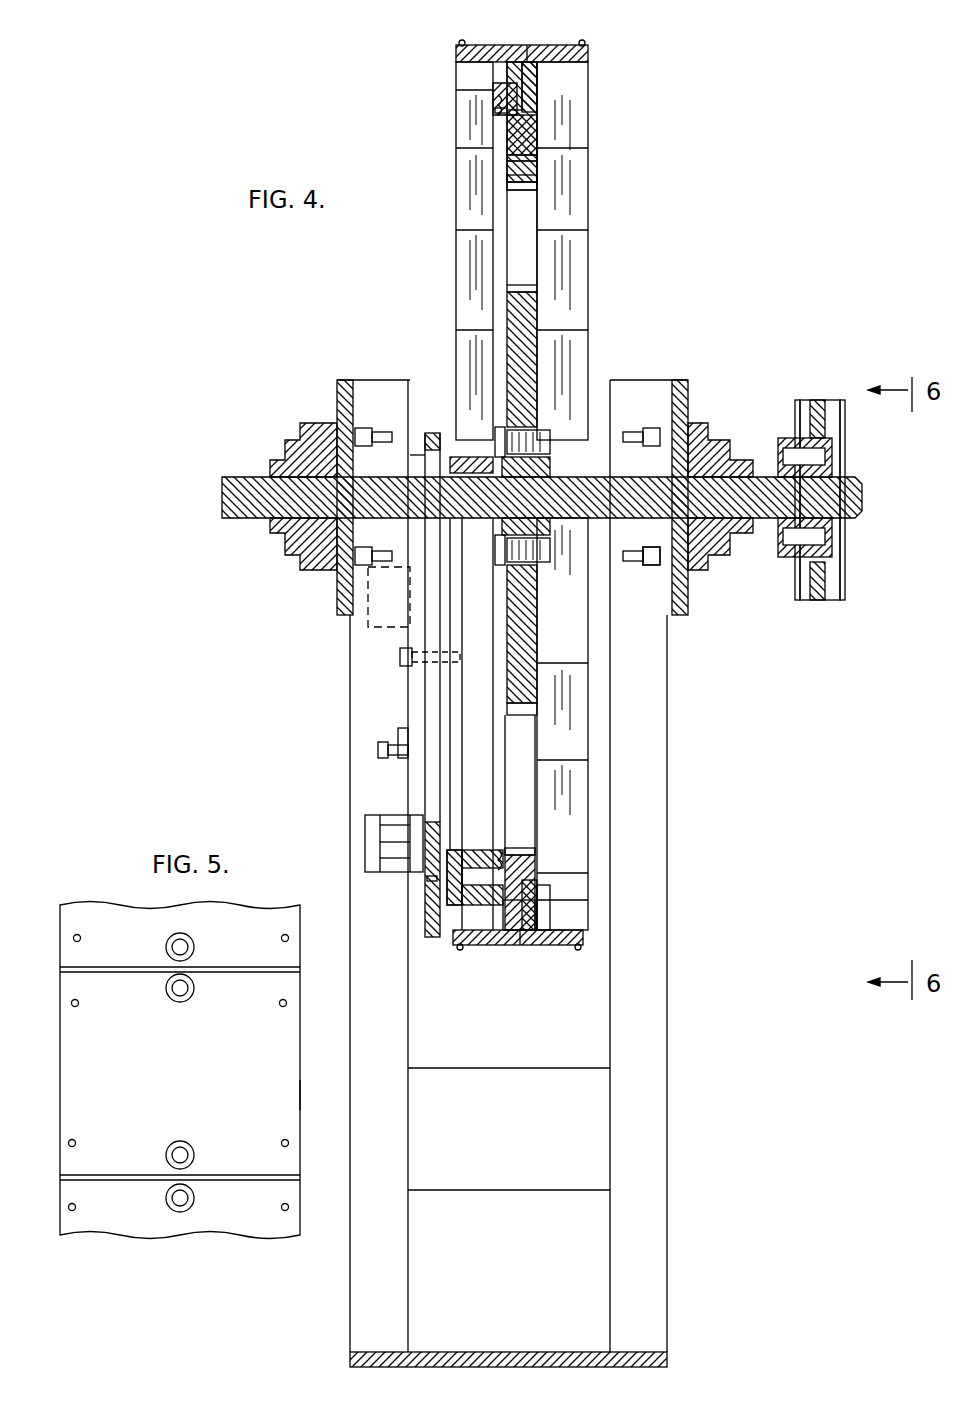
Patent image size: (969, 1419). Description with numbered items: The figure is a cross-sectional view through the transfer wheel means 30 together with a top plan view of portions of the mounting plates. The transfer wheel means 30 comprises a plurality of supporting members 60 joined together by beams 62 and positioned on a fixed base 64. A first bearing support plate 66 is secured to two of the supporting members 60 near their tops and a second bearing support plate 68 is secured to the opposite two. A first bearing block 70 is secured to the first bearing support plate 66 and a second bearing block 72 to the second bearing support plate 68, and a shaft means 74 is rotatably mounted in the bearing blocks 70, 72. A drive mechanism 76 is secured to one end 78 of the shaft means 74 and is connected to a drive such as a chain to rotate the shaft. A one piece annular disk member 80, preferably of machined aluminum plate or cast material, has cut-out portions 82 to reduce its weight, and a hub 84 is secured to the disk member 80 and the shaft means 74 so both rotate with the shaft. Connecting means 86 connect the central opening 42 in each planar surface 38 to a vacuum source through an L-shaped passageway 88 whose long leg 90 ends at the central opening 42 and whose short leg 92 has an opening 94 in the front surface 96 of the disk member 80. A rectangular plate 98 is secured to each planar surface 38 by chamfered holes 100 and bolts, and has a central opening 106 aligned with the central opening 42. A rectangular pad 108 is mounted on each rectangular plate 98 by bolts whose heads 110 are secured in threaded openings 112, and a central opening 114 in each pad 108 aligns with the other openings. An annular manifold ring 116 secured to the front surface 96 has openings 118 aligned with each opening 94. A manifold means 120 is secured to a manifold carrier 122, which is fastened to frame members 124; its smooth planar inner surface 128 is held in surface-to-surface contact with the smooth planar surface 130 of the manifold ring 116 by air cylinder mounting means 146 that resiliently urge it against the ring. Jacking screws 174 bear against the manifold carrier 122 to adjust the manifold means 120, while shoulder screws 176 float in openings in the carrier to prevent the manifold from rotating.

In FIG. 4, the transfer wheel means 30 is at (310, 720).
In FIG. 5, the planar surface 38 is at (133, 938).
In FIG. 4, the central opening 42 is at (525, 70).
In FIG. 4, the supporting members 60 is at (352, 1005).
In FIG. 4, the beams 62 is at (525, 1158).
In FIG. 4, the fixed base 64 is at (645, 1352).
In FIG. 4, the first bearing support plate 66 is at (340, 392).
In FIG. 4, the second bearing support plate 68 is at (683, 398).
In FIG. 4, the first bearing block 70 is at (300, 528).
In FIG. 4, the second bearing block 72 is at (725, 540).
In FIG. 4, the shaft means 74 is at (637, 522).
In FIG. 4, the drive mechanism 76 is at (820, 430).
In FIG. 4, the one end 78 is at (862, 505).
In FIG. 4, the annular disk member 80 is at (528, 308).
In FIG. 4, the cut-out portions 82 is at (528, 225).
In FIG. 4, the hub 84 is at (548, 540).
In FIG. 4, the connecting means 86 is at (445, 112).
In FIG. 4, the L-shaped passageway 88 is at (545, 103).
In FIG. 4, the long leg 90 is at (495, 85).
In FIG. 4, the short leg 92 is at (500, 180).
In FIG. 4, the opening 94 is at (510, 130).
In FIG. 4, the front surface 96 is at (540, 190).
In FIG. 4, the rectangular plate 98 is at (500, 45).
In FIG. 5, the rectangular plate 98 is at (290, 1088).
In FIG. 5, the chamfered holes 100 is at (194, 985).
In FIG. 5, the central opening 106 is at (178, 1070).
In FIG. 4, the rectangular pad 108 is at (456, 55).
In FIG. 4, the heads 110 is at (462, 42).
In FIG. 5, the threaded openings 112 is at (68, 1000).
In FIG. 4, the central opening 114 is at (527, 45).
In FIG. 4, the annular manifold ring 116 is at (500, 95).
In FIG. 4, the openings 118 is at (505, 110).
In FIG. 4, the manifold means 120 is at (475, 715).
In FIG. 4, the manifold carrier 122 is at (428, 890).
In FIG. 4, the frame members 124 is at (418, 760).
In FIG. 4, the inner surface 128 is at (450, 905).
In FIG. 4, the smooth planar surface 130 is at (510, 150).
In FIG. 4, the air cylinder mounting means 146 is at (365, 842).
In FIG. 4, the jacking screws 174 is at (378, 750).
In FIG. 4, the shoulder screws 176 is at (400, 657).